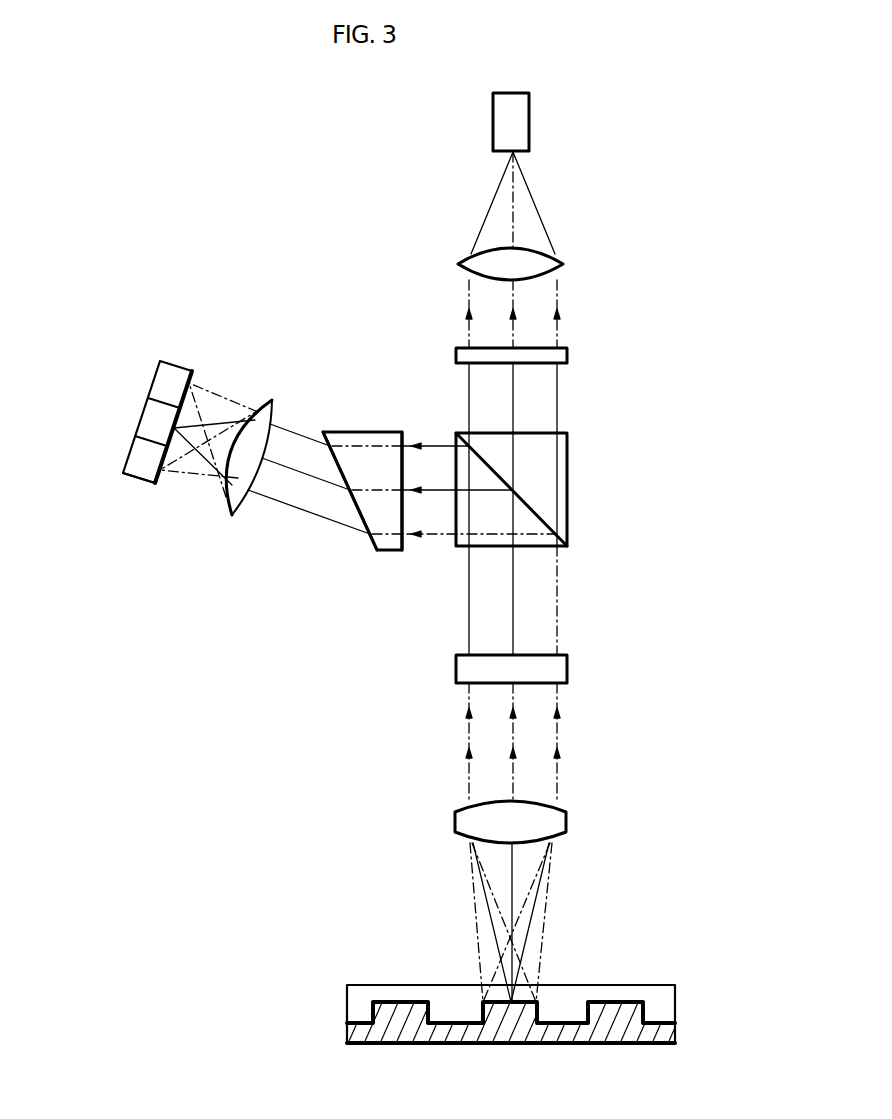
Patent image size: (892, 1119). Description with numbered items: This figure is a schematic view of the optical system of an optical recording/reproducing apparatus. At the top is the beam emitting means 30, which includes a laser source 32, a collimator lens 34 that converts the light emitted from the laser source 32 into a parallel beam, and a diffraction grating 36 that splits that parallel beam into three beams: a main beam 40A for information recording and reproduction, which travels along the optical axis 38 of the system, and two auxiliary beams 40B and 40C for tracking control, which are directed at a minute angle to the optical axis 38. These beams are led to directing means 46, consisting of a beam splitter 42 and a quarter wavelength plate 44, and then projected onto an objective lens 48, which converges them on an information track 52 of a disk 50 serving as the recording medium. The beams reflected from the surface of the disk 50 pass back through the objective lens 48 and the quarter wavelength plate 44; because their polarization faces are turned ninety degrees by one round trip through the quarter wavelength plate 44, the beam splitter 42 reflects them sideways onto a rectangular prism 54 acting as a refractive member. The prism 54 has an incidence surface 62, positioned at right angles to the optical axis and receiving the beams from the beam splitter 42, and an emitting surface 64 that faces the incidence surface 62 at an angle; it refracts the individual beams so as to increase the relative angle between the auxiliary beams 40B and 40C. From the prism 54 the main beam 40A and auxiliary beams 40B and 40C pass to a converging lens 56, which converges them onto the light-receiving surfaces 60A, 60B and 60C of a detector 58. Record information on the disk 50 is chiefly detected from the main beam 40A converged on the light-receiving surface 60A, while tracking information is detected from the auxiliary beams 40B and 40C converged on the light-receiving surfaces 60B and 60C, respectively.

The beam emitting means 30 is at (453, 243).
The laser source 32 is at (531, 121).
The collimator lens 34 is at (564, 258).
The diffraction grating 36 is at (568, 356).
The optical axis 38 is at (512, 590).
The main beam 40A is at (513, 965).
The auxiliary beam 40B is at (541, 920).
The auxiliary beam 40C is at (477, 923).
The beam splitter 42 is at (569, 478).
The quarter wavelength plate 44 is at (569, 669).
The directing means 46 is at (583, 535).
The objective lens 48 is at (567, 822).
The disk 50 is at (632, 985).
The information track 52 is at (675, 1011).
The rectangular prism 54 is at (377, 553).
The converging lens 56 is at (234, 515).
The detector 58 is at (122, 447).
The light-receiving surface 60A is at (182, 417).
The light-receiving surface 60B is at (157, 486).
The light-receiving surface 60C is at (192, 373).
The incidence surface 62 is at (403, 431).
The emitting surface 64 is at (358, 515).